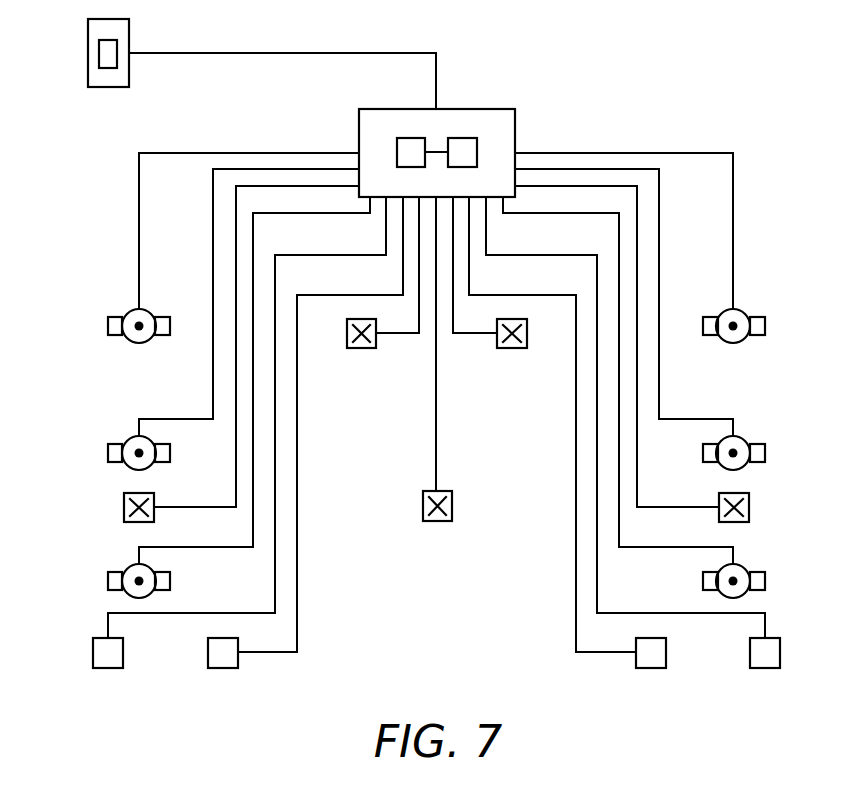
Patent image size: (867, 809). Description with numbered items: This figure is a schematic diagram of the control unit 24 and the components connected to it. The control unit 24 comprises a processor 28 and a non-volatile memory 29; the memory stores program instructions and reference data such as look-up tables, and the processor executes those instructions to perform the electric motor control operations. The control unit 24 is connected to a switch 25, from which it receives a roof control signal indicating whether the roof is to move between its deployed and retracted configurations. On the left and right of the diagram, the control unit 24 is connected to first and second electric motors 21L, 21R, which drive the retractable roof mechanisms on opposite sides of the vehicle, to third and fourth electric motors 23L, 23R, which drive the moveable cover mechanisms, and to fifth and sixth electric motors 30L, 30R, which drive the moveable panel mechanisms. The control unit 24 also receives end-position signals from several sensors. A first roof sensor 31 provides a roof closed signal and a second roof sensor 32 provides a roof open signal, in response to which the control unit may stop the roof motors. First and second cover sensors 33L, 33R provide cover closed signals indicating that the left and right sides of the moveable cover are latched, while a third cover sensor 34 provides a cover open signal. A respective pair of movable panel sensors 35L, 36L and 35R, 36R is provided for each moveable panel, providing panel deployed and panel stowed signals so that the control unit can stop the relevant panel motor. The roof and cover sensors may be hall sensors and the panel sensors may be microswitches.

The control unit 24 is at (359, 117).
The switch 25 is at (88, 29).
The processor 28 is at (413, 138).
The non-volatile memory 29 is at (463, 138).
The first electric motor 21L is at (108, 322).
The second electric motor 21R is at (766, 326).
The third electric motor 23L is at (108, 450).
The fourth electric motor 23R is at (766, 453).
The fifth electric motor 30L is at (108, 578).
The sixth electric motor 30R is at (766, 581).
The first roof sensor 31 is at (361, 349).
The second roof sensor 32 is at (510, 349).
The first cover sensor 33L is at (124, 505).
The second cover sensor 33R is at (750, 507).
The third cover sensor 34 is at (435, 522).
The first movable panel sensor 35L is at (100, 669).
The movable panel sensor 35R is at (642, 669).
The movable panel sensor 36L is at (214, 669).
The movable panel sensor 36R is at (756, 669).